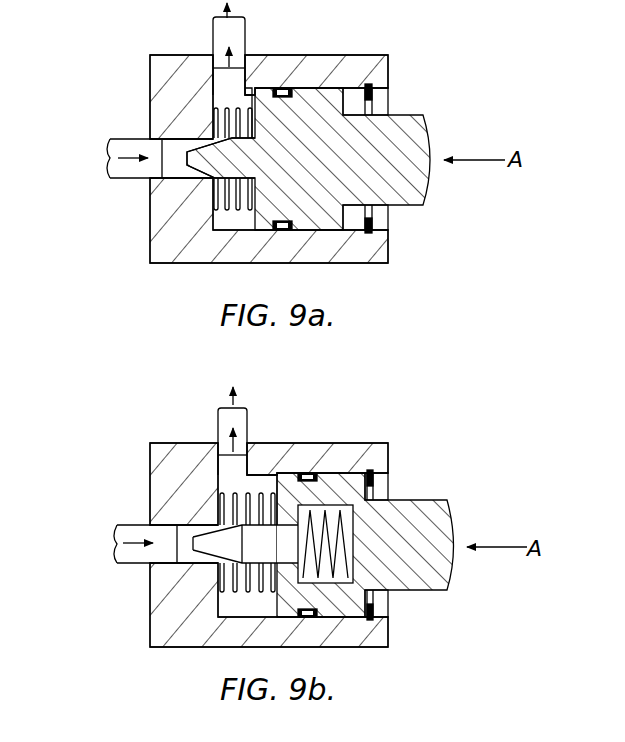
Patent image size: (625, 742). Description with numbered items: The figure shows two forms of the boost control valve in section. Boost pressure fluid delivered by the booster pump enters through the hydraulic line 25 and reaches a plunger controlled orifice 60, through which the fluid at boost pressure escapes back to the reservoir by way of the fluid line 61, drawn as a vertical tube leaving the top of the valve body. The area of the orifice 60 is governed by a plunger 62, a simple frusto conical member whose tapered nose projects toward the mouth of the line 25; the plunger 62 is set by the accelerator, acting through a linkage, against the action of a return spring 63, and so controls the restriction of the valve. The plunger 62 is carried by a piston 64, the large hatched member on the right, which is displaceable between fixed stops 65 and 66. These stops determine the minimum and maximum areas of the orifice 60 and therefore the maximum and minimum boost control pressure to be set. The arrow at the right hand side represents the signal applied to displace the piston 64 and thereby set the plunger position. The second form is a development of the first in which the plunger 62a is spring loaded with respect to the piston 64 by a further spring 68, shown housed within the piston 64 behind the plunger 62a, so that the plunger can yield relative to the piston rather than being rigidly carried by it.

In FIG. 9a, the hydraulic line 25 is at (110, 150).
In FIG. 9b, the hydraulic line 25 is at (118, 532).
In FIG. 9a, the plunger controlled orifice 60 is at (210, 128).
In FIG. 9a, the fluid line 61 is at (217, 36).
In FIG. 9b, the fluid line 61 is at (223, 430).
In FIG. 9a, the plunger 62 is at (203, 170).
In FIG. 9b, the plunger 62a is at (205, 548).
In FIG. 9a, the return spring 63 is at (217, 210).
In FIG. 9b, the return spring 63 is at (218, 489).
In FIG. 9a, the piston 64 is at (405, 182).
In FIG. 9b, the piston 64 is at (435, 525).
In FIG. 9a, the fixed stop 65 is at (248, 92).
In FIG. 9a, the fixed stop 66 is at (374, 98).
In FIG. 9b, the fixed stop 66 is at (375, 480).
In FIG. 9b, the further spring 68 is at (374, 601).